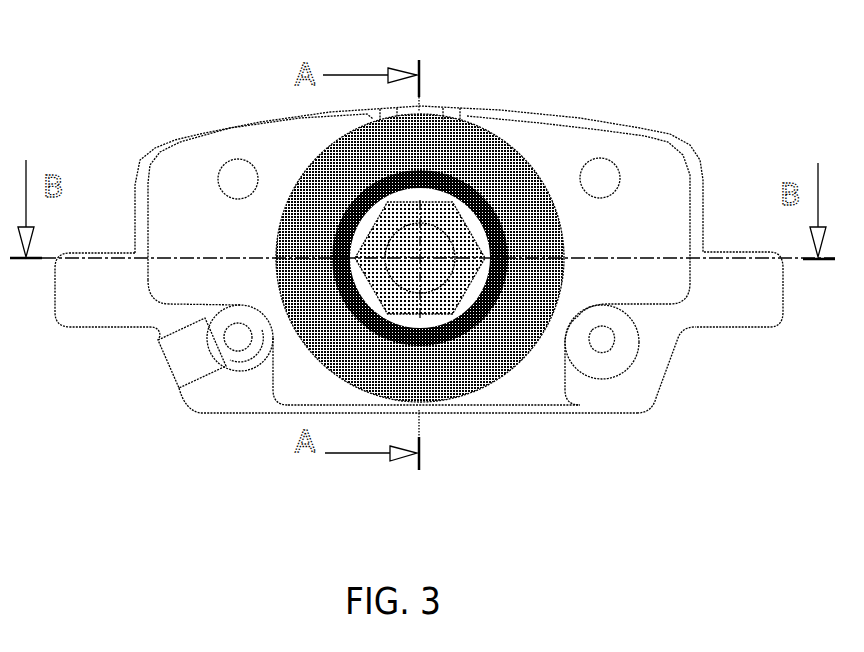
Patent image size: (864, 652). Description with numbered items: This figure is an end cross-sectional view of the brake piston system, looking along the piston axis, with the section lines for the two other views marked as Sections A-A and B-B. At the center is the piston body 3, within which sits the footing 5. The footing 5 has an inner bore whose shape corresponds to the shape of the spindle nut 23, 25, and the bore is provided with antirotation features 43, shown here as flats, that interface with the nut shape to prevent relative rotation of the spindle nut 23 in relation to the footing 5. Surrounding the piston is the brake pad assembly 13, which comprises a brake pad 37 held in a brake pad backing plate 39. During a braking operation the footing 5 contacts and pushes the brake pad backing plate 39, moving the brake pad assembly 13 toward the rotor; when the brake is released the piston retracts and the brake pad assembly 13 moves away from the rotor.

The piston body 3 is at (309, 245).
The footing 5 is at (307, 350).
The brake pad assembly 13 is at (446, 269).
The spindle nut 23 is at (437, 213).
The spindle nut 25 is at (313, 162).
The brake pad 37 is at (650, 273).
The brake pad backing plate 39 is at (627, 398).
The antirotation features 43 is at (468, 392).